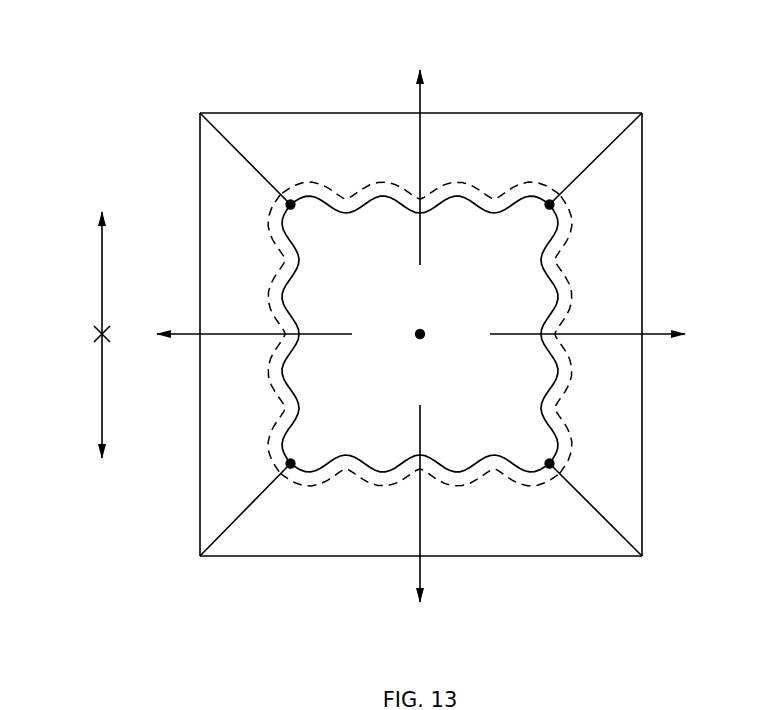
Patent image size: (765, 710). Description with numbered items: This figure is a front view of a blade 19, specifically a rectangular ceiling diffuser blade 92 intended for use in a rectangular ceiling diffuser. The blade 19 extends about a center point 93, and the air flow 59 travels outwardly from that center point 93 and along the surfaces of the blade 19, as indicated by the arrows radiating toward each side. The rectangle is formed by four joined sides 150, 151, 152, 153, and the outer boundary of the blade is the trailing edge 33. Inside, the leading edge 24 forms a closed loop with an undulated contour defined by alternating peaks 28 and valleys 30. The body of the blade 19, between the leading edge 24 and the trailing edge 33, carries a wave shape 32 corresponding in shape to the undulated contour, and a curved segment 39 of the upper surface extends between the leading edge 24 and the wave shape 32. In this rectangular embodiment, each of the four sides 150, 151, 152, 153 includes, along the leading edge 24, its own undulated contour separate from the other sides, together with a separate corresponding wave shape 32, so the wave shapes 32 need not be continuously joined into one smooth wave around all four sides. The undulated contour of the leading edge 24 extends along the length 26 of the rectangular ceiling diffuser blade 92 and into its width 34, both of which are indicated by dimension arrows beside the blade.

The blade 19 is at (583, 135).
The rectangular ceiling diffuser blade 92 is at (465, 311).
The side 152 is at (258, 112).
The side 150 is at (258, 557).
The side 151 is at (200, 497).
The side 153 is at (642, 498).
The trailing edge 33 is at (200, 225).
The curved segment 39 is at (360, 196).
The leading edge 24 is at (326, 186).
The wave shape 32 is at (524, 185).
The air flow 59 is at (420, 102).
The length 26 is at (100, 278).
The width 34 is at (97, 332).
The center point 93 is at (418, 335).
The peaks 28 is at (302, 213).
The valleys 30 is at (384, 204).